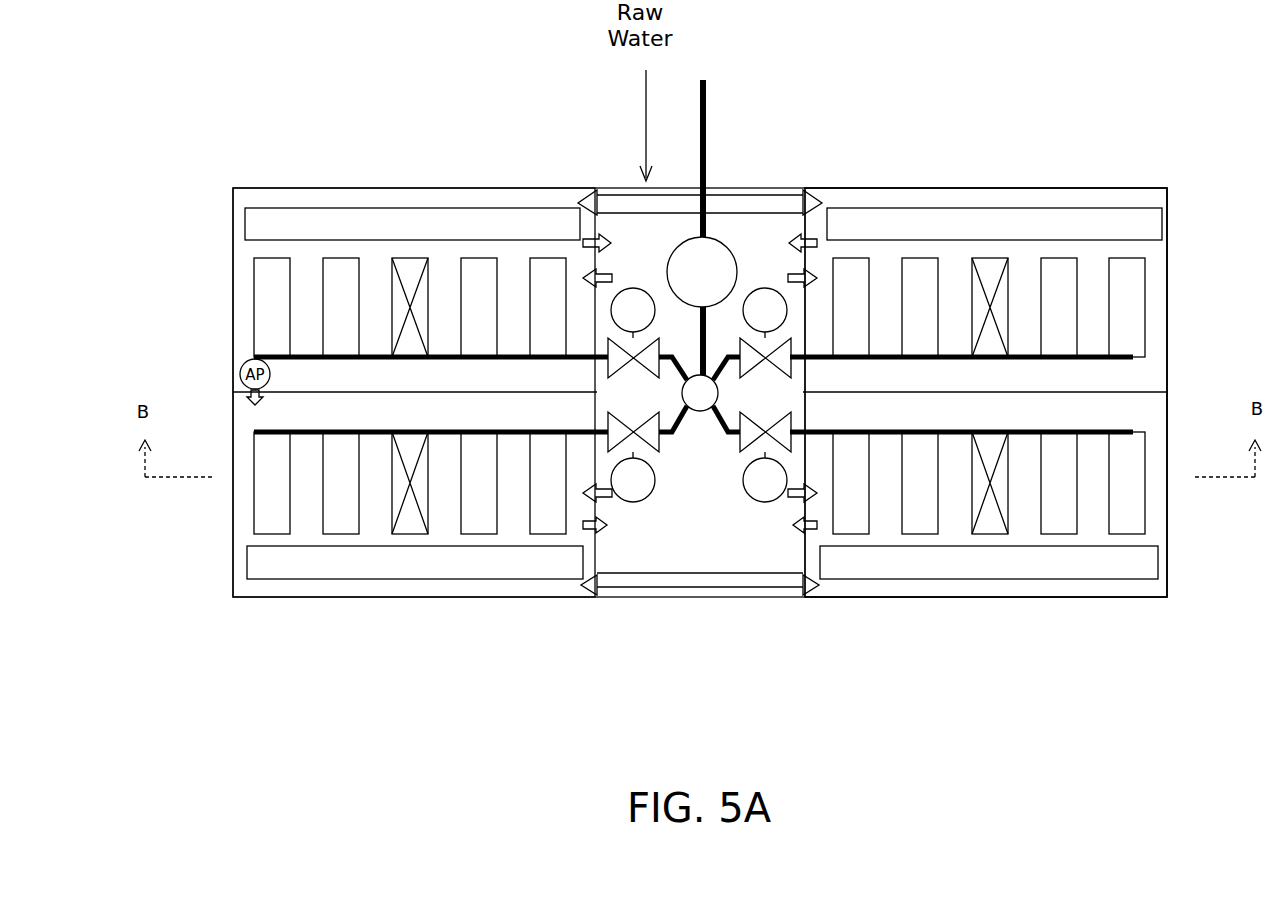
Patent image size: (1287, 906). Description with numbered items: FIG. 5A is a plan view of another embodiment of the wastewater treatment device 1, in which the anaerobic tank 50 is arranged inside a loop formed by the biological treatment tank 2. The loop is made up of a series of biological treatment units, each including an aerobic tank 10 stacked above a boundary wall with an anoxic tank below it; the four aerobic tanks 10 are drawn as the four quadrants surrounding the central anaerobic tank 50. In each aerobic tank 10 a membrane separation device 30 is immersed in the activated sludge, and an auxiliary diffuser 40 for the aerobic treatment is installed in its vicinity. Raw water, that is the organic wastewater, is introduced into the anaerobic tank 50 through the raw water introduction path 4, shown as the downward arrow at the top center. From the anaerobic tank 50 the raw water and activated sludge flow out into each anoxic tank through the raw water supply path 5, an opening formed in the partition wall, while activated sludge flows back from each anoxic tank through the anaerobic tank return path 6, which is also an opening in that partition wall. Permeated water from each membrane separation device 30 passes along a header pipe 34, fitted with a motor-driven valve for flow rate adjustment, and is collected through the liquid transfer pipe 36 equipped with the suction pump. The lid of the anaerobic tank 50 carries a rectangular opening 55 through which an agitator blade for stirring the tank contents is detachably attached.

The wastewater treatment device 1 is at (806, 90).
The biological treatment tank 2 is at (1157, 188).
The raw water introduction path 4 is at (640, 82).
The raw water supply path 5 is at (613, 506).
The anaerobic tank return path 6 is at (611, 534).
The aerobic tank 10 is at (400, 193).
The membrane separation device 30 is at (540, 256).
The header pipe 34 is at (507, 360).
The liquid transfer pipe 36 is at (710, 118).
The auxiliary diffuser 40 is at (505, 210).
The anaerobic tank 50 is at (711, 557).
The rectangular opening 55 is at (400, 478).